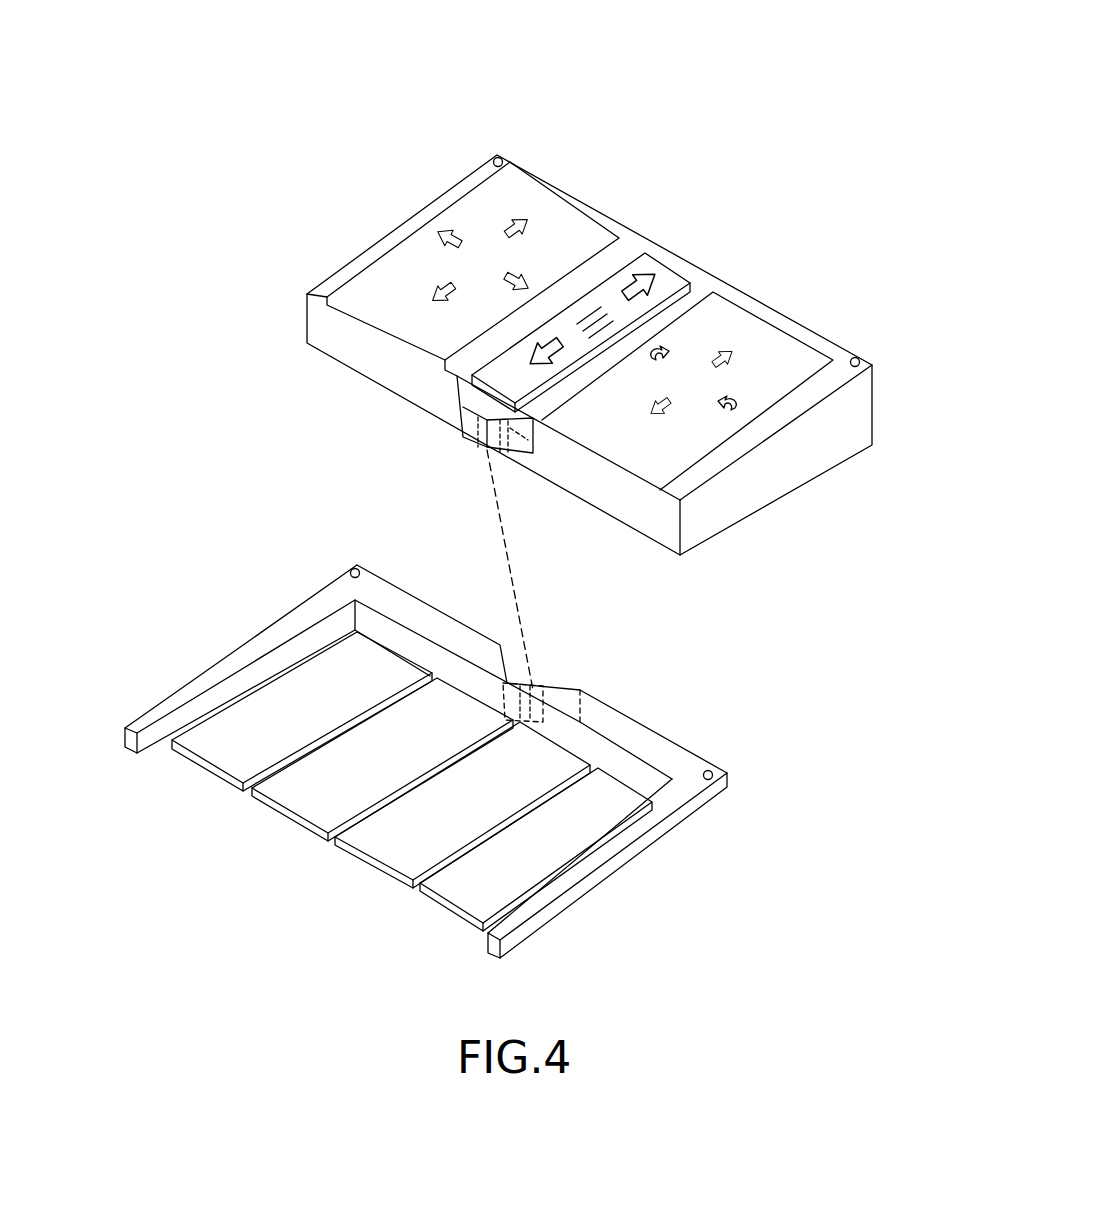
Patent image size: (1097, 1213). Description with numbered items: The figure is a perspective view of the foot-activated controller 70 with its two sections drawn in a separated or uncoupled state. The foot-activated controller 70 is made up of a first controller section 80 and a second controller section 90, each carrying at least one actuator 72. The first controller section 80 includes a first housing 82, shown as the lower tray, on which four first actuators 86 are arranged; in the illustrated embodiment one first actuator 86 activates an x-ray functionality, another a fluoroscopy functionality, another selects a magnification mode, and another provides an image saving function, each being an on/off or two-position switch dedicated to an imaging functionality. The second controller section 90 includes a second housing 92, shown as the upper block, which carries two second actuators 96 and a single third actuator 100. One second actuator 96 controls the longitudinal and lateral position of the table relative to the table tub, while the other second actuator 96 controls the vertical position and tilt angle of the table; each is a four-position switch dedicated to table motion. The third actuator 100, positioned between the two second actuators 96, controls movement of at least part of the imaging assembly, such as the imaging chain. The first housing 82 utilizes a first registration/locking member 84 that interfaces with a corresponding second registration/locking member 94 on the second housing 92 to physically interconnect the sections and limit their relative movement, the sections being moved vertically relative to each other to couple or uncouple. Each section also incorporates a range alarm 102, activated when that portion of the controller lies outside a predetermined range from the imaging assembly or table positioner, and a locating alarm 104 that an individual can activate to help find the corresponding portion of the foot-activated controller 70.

The foot-activated controller 70 is at (722, 116).
The actuator 72 is at (780, 282).
The first controller section 80 is at (610, 893).
The first housing 82 is at (680, 848).
The first registration/locking member 84 is at (580, 676).
The first actuator 86 is at (268, 804).
The second controller section 90 is at (873, 395).
The second housing 92 is at (808, 470).
The second registration/locking member 94 is at (436, 444).
The second actuator 96 is at (604, 363).
The third actuator 100 is at (661, 252).
The range alarm 102 is at (500, 157).
The locating alarm 104 is at (852, 358).